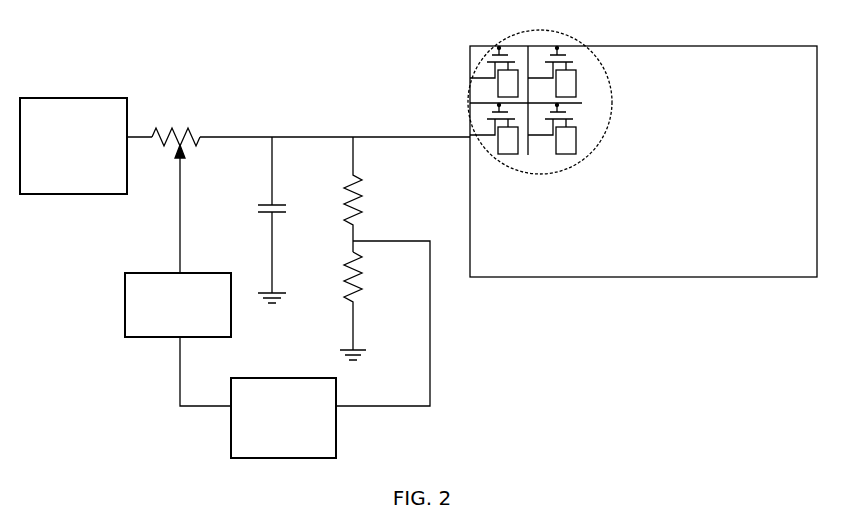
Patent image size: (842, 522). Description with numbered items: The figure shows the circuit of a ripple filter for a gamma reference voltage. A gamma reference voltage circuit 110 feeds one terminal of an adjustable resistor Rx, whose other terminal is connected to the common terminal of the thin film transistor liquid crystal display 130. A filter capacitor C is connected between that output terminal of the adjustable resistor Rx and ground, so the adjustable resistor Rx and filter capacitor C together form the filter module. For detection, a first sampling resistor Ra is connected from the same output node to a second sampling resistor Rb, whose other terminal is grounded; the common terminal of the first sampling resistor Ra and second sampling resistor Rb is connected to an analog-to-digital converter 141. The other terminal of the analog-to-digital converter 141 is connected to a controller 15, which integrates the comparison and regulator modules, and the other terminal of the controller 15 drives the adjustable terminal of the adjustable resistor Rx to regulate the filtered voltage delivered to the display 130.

The gamma reference voltage circuit 110 is at (74, 98).
The controller 15 is at (168, 273).
The analog-to-digital converter 141 is at (263, 378).
The thin film transistor liquid crystal display 130 is at (680, 46).
The adjustable resistor Rx is at (176, 190).
The filter capacitor C is at (280, 220).
The first sampling resistor Ra is at (368, 194).
The second sampling resistor Rb is at (366, 306).